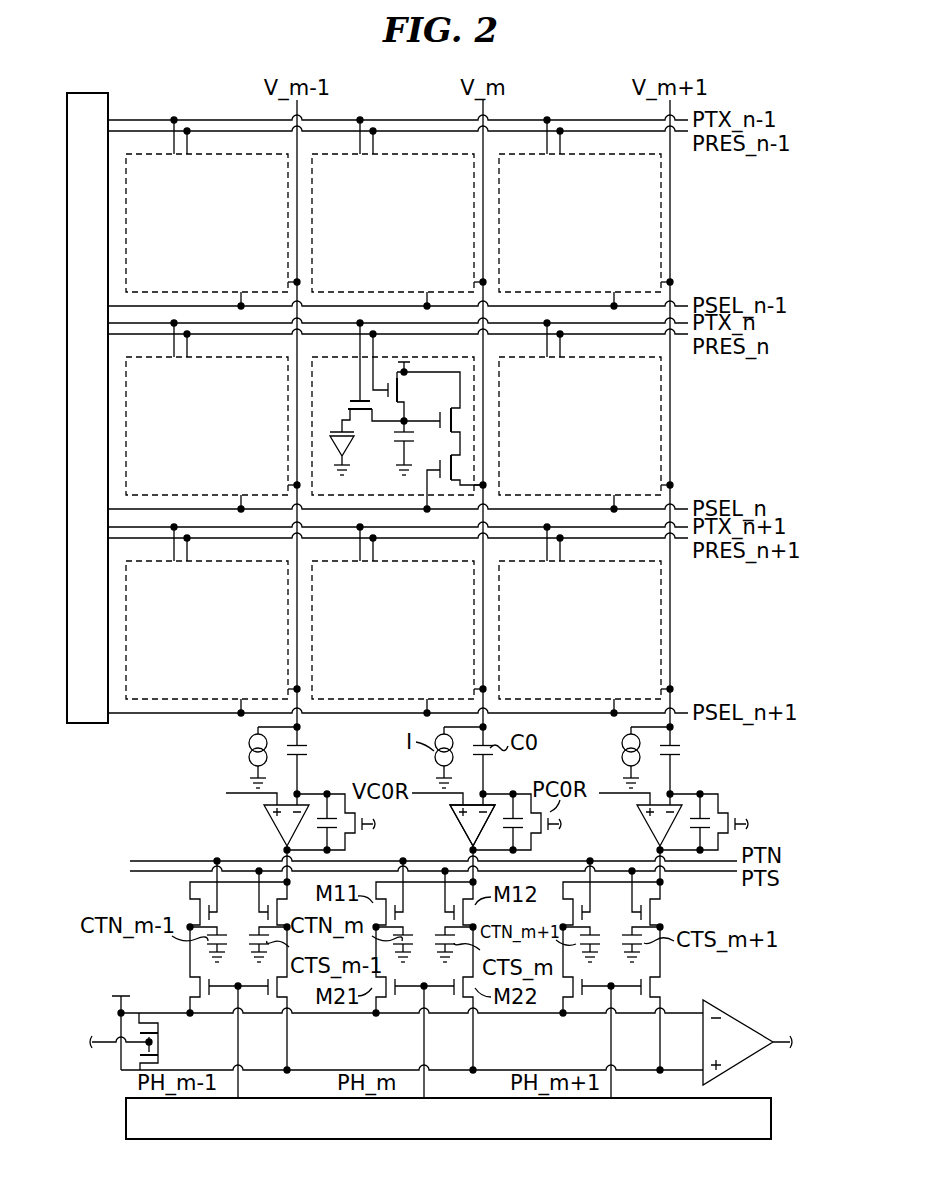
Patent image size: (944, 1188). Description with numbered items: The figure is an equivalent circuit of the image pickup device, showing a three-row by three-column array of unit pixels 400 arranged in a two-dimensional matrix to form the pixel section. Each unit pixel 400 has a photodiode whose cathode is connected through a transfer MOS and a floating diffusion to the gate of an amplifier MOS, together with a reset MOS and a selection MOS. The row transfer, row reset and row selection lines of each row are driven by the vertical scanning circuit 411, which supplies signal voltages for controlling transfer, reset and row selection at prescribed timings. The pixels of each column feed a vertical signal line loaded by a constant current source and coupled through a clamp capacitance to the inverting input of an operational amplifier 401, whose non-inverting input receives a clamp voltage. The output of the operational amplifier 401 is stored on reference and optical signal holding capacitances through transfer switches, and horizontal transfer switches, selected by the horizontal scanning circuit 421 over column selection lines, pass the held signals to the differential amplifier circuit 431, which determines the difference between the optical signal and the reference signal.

The unit pixel 400 is at (211, 153).
The operational amplifier 401 is at (461, 826).
The vertical scanning circuit 411 is at (108, 110).
The horizontal scanning circuit 421 is at (126, 1119).
The differential amplifier circuit 431 is at (756, 1009).